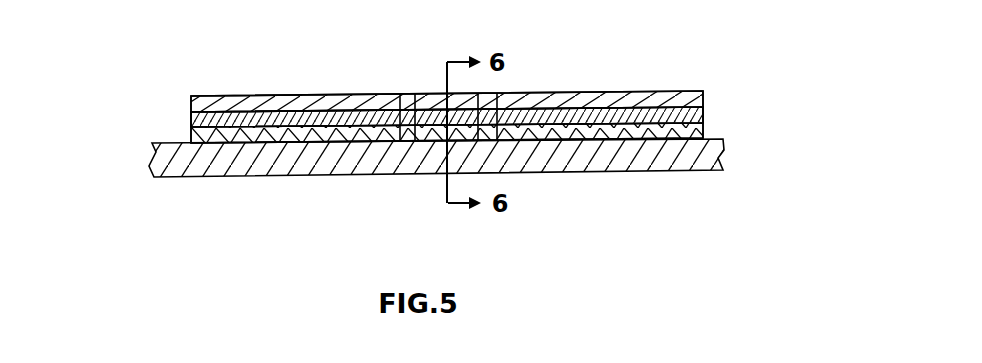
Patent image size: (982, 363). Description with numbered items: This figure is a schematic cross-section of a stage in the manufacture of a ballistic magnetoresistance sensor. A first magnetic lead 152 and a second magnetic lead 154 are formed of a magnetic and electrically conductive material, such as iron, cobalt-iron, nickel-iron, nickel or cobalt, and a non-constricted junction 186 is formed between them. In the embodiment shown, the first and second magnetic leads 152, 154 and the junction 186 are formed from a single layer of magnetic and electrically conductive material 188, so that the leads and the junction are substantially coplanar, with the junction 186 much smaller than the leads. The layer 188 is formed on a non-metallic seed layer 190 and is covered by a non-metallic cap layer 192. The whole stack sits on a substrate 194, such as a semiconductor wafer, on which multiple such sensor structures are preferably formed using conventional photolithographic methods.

The first magnetic lead 152 is at (297, 127).
The second magnetic lead 154 is at (615, 110).
The non-constricted junction 186 is at (430, 112).
The layer of magnetic and electrically conductive material 188 is at (705, 112).
The non-metallic seed layer 190 is at (190, 135).
The non-metallic cap layer 192 is at (218, 102).
The substrate 194 is at (705, 153).